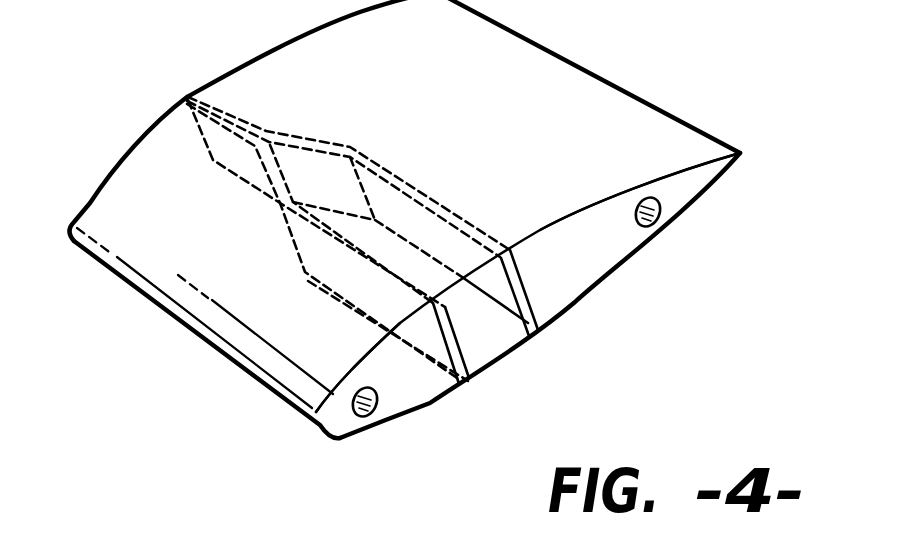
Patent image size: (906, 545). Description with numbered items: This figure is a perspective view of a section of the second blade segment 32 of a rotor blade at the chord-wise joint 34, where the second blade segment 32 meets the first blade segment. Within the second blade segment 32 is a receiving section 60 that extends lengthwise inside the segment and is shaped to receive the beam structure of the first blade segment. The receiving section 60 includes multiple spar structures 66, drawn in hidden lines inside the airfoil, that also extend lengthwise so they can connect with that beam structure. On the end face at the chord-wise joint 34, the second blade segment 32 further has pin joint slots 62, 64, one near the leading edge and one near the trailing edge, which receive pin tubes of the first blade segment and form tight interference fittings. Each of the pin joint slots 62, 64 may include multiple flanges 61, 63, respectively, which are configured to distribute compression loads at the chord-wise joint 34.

The second blade segment 32 is at (535, 67).
The chord-wise joint 34 is at (340, 423).
The receiving section 60 is at (487, 337).
The flanges 61 is at (376, 394).
The pin joint slot 62 is at (373, 404).
The flanges 63 is at (660, 203).
The pin joint slot 64 is at (661, 213).
The spar structures 66 is at (434, 200).